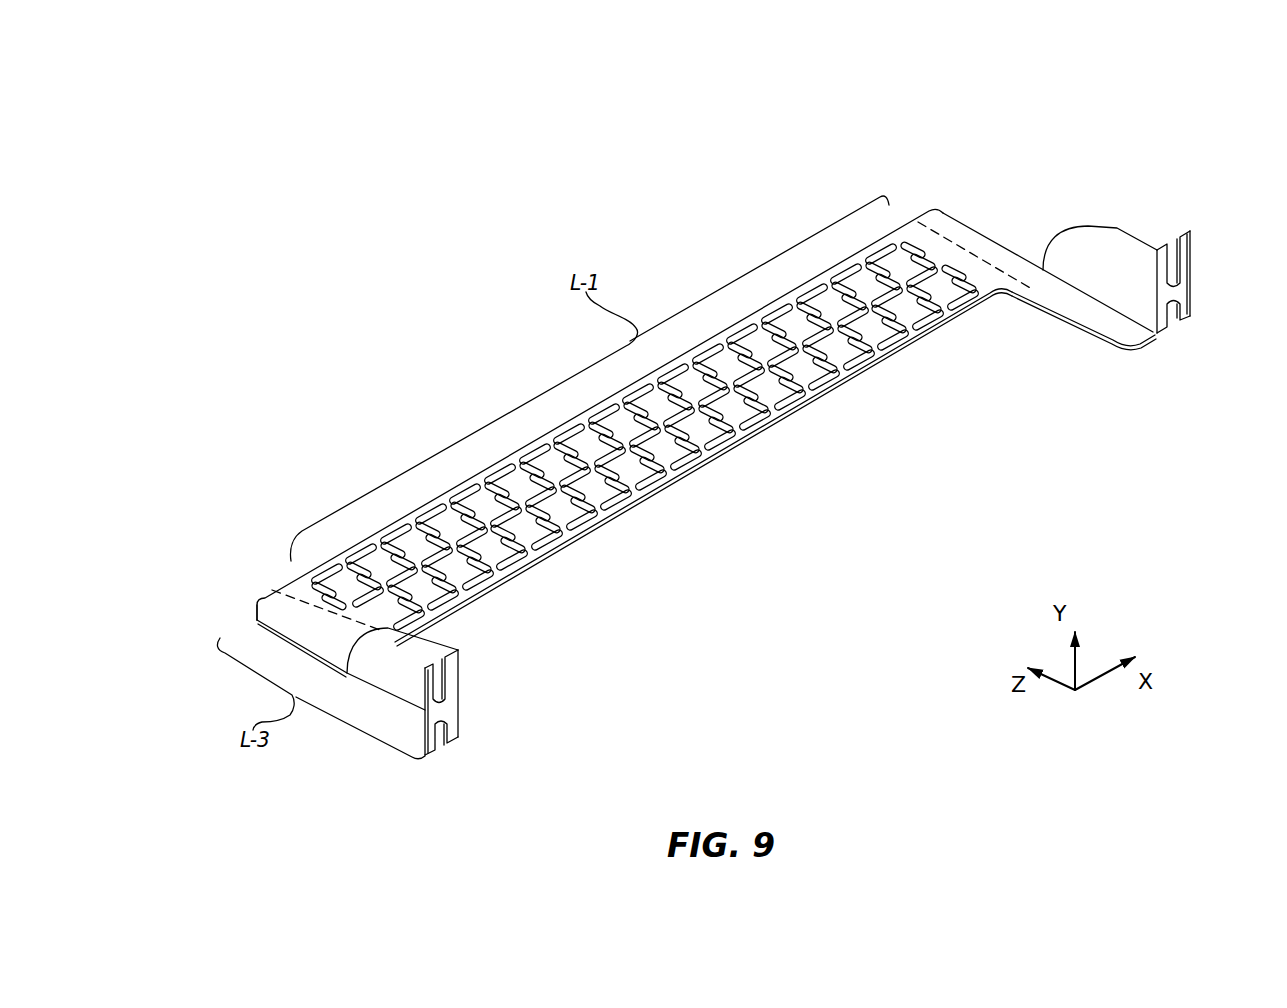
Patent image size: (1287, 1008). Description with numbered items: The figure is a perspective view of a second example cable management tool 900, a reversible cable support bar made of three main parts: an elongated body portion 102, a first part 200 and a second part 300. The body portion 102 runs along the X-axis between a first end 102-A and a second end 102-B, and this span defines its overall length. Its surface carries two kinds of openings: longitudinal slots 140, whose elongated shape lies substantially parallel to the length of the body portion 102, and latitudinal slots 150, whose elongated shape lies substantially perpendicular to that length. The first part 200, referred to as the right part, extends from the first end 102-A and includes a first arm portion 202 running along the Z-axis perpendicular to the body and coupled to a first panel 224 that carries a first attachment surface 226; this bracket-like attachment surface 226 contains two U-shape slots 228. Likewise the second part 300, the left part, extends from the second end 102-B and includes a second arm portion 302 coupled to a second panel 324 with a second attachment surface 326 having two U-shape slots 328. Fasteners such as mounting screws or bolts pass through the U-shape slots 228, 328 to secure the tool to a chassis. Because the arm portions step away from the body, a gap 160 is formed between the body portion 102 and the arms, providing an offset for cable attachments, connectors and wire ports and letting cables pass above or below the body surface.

The cable management tool 900 is at (352, 130).
The body portion 102 is at (873, 388).
The first end 102-A is at (917, 203).
The second end 102-B is at (276, 553).
The longitudinal slots 140 is at (586, 523).
The latitudinal slots 150 is at (676, 396).
The gap 160 is at (843, 552).
The first part 200 is at (1040, 238).
The first arm portion 202 is at (1097, 313).
The first panel 224 is at (1120, 258).
The first attachment surface 226 is at (1180, 323).
The U-shape slots 228 is at (1181, 298).
The second part 300 is at (254, 578).
The second arm portion 302 is at (284, 614).
The second panel 324 is at (432, 648).
The second attachment surface 326 is at (461, 742).
The U-shape slots 328 is at (460, 712).